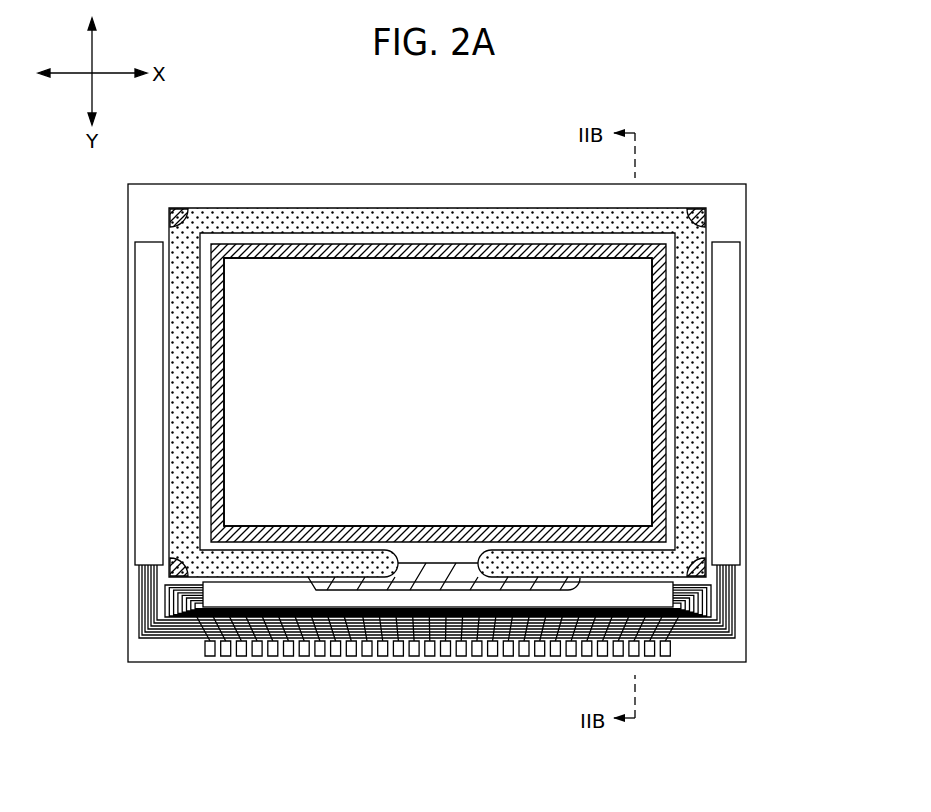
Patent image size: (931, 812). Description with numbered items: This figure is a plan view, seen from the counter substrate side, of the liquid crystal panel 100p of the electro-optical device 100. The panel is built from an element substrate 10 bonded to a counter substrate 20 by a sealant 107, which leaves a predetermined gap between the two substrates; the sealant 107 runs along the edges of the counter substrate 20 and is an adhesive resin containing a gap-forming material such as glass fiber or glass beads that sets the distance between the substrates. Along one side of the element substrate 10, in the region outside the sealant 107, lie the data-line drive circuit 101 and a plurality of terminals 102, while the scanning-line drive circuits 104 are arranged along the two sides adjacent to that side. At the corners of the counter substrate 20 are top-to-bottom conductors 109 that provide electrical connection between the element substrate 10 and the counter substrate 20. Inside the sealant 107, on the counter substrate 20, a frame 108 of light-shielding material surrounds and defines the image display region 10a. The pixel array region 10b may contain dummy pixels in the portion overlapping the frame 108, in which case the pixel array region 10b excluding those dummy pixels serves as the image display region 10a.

The element substrate 10 is at (392, 183).
The counter substrate 20 is at (483, 183).
The image display region 10a is at (247, 348).
The pixel array region 10b is at (438, 392).
The electro-optical device 100 is at (682, 95).
The liquid crystal panel 100p is at (659, 181).
The data-line drive circuit 101 is at (236, 600).
The terminals 102 is at (543, 652).
The scanning-line drive circuits 104 is at (145, 395).
The sealant 107 is at (690, 352).
The frame 108 is at (657, 304).
The top-to-bottom conductors 109 is at (174, 207).